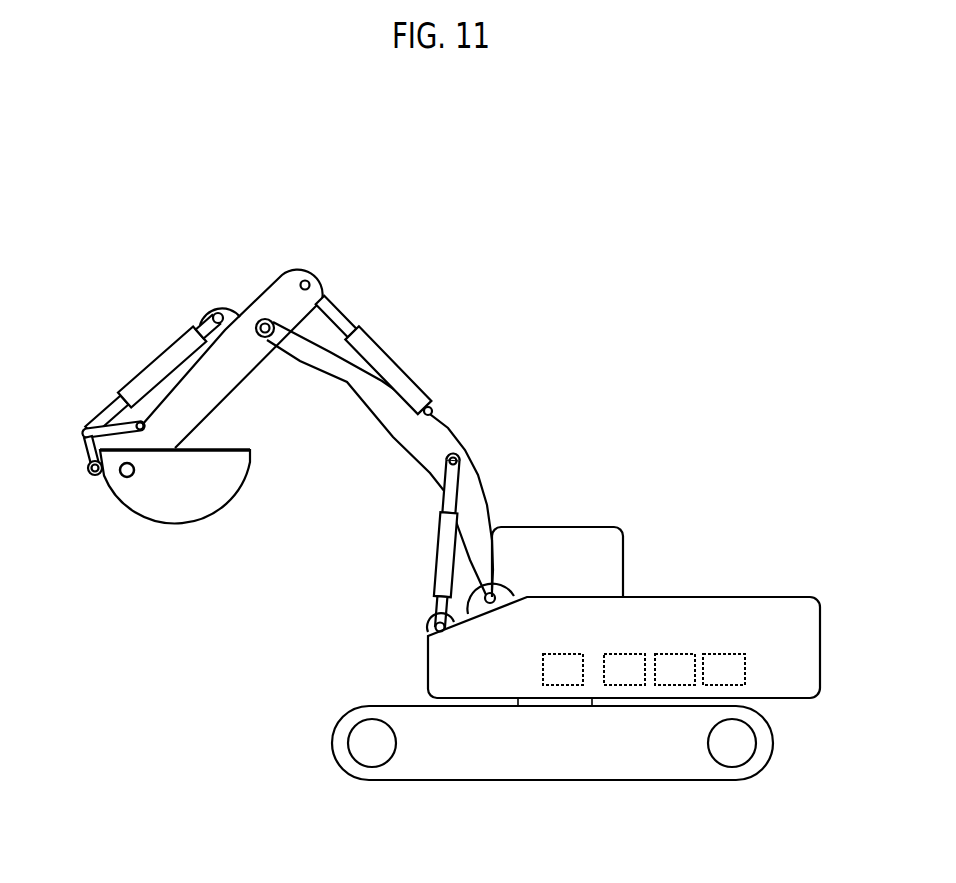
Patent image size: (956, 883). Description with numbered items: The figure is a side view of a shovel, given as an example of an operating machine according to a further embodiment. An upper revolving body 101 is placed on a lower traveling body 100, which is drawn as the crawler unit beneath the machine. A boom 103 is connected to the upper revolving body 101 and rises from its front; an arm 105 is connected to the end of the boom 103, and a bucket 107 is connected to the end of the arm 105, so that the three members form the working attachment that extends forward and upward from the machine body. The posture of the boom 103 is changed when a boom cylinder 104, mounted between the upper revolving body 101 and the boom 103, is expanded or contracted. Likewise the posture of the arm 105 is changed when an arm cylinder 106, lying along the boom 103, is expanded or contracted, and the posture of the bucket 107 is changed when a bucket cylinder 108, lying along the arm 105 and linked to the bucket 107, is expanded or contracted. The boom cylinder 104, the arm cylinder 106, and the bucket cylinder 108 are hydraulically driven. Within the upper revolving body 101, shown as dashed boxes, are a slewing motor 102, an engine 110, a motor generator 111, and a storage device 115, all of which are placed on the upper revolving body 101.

The lower traveling body 100 is at (678, 782).
The upper revolving body 101 is at (425, 667).
The slewing motor 102 is at (562, 653).
The boom 103 is at (395, 445).
The boom cylinder 104 is at (438, 572).
The arm 105 is at (260, 293).
The arm cylinder 106 is at (402, 368).
The bucket 107 is at (138, 518).
The bucket cylinder 108 is at (160, 367).
The engine 110 is at (627, 653).
The motor generator 111 is at (685, 653).
The storage device 115 is at (728, 653).